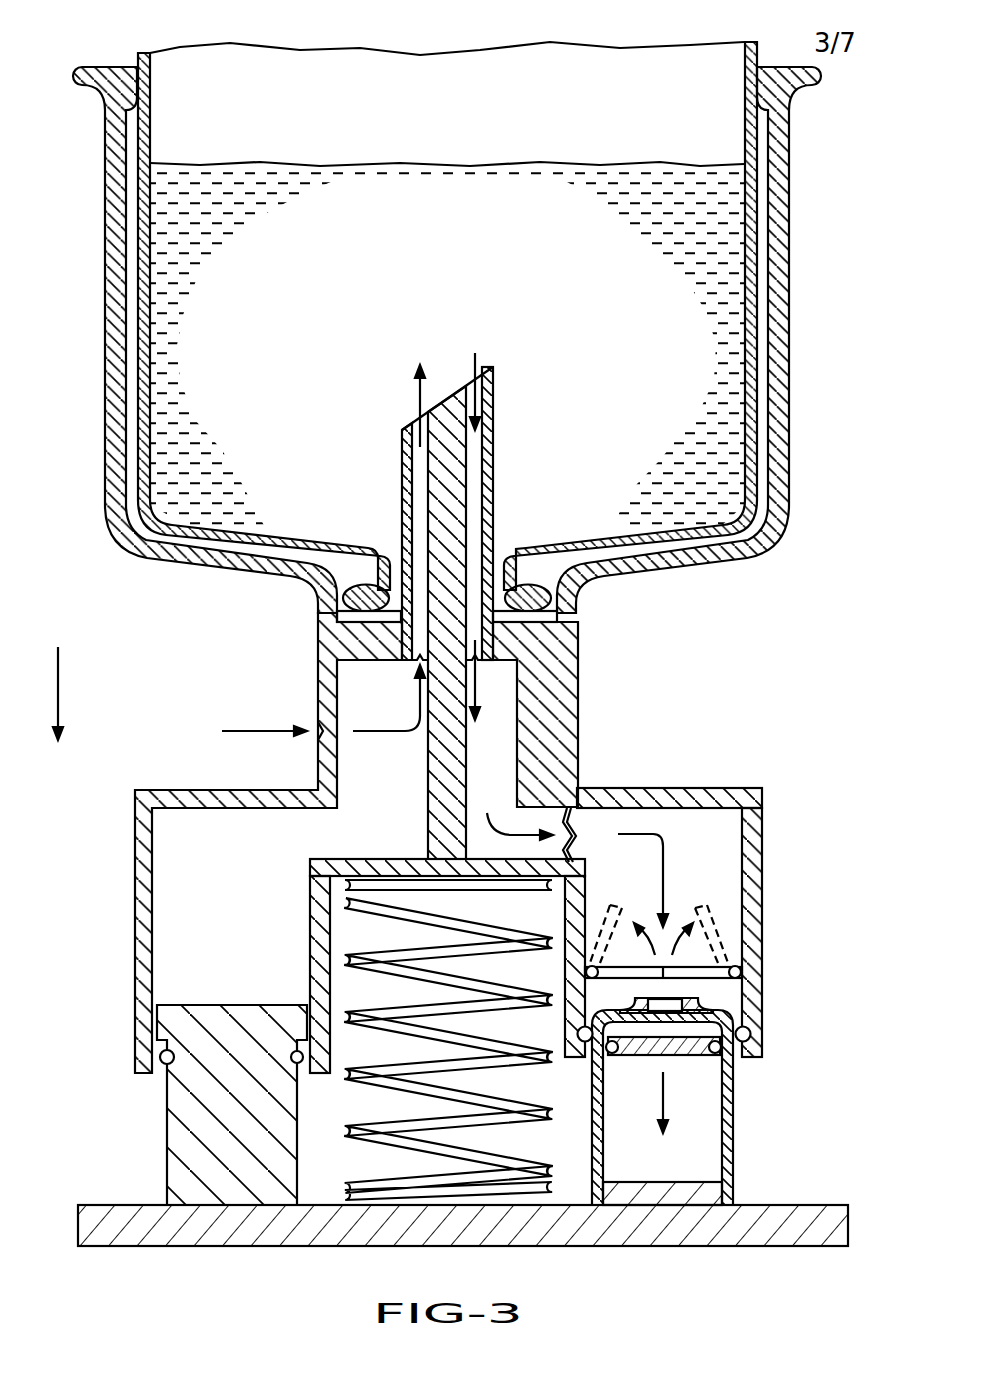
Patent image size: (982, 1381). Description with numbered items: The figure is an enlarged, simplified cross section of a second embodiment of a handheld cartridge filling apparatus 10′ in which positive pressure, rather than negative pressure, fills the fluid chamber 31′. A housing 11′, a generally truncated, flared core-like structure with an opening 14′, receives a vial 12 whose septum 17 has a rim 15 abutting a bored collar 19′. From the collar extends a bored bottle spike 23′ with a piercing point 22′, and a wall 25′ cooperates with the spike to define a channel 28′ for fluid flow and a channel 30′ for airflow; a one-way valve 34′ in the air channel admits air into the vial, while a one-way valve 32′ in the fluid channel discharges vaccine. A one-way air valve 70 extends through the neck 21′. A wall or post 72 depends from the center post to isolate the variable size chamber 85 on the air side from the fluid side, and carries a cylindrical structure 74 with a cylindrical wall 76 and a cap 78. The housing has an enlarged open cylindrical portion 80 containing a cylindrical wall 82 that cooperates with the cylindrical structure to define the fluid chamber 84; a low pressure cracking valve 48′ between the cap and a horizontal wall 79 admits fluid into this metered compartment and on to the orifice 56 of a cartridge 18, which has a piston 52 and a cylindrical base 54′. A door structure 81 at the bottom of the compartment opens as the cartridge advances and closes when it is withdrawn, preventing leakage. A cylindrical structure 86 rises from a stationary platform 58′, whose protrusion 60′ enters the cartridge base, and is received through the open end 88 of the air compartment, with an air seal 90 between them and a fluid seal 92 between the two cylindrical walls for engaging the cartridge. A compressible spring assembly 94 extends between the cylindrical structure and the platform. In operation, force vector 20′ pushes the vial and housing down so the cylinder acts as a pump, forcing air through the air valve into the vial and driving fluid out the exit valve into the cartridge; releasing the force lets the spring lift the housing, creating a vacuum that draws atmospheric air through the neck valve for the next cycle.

The cartridge filling apparatus 10′ is at (90, 386).
The housing 11′ is at (805, 362).
The vial 12 is at (765, 233).
The opening 14′ is at (130, 88).
The rim 15 is at (536, 596).
The septum 17 is at (347, 622).
The cartridge 18 is at (740, 1132).
The bored collar 19′ is at (512, 648).
The force vector 20′ is at (58, 690).
The neck 21′ is at (318, 692).
The piercing point 22′ is at (494, 367).
The bottle spike 23′ is at (500, 404).
The wall 25′ is at (444, 397).
The channel 28′ is at (471, 503).
The channel 30′ is at (418, 482).
The fluid chamber 31′ is at (707, 827).
The one-way valve 32′ is at (510, 684).
The one-way valve 34′ is at (413, 661).
The low pressure cracking valve 48′ is at (572, 832).
The cartridge piston 52 is at (687, 1050).
The cylindrical base 54′ is at (742, 1215).
The orifice 56 is at (663, 1012).
The platform 58′ is at (797, 1205).
The protrusion 60′ is at (670, 1205).
The one-way air valve 70 is at (318, 745).
The wall or post 72 is at (467, 753).
The cylindrical structure 74 is at (586, 878).
The cylindrical wall 76 is at (312, 940).
The cap 78 is at (360, 859).
The horizontal wall 79 is at (663, 790).
The open cylindrical portion 80 is at (766, 828).
The door structure 81 is at (700, 972).
The cylindrical wall 82 is at (762, 870).
The fluid chamber 84 is at (713, 887).
The variable size chamber 85 is at (187, 930).
The cylindrical structure 86 is at (165, 1140).
The open end 88 is at (150, 1074).
The air seal 90 is at (158, 1056).
The fluid seal 92 is at (746, 1034).
The compressible spring assembly 94 is at (357, 1140).